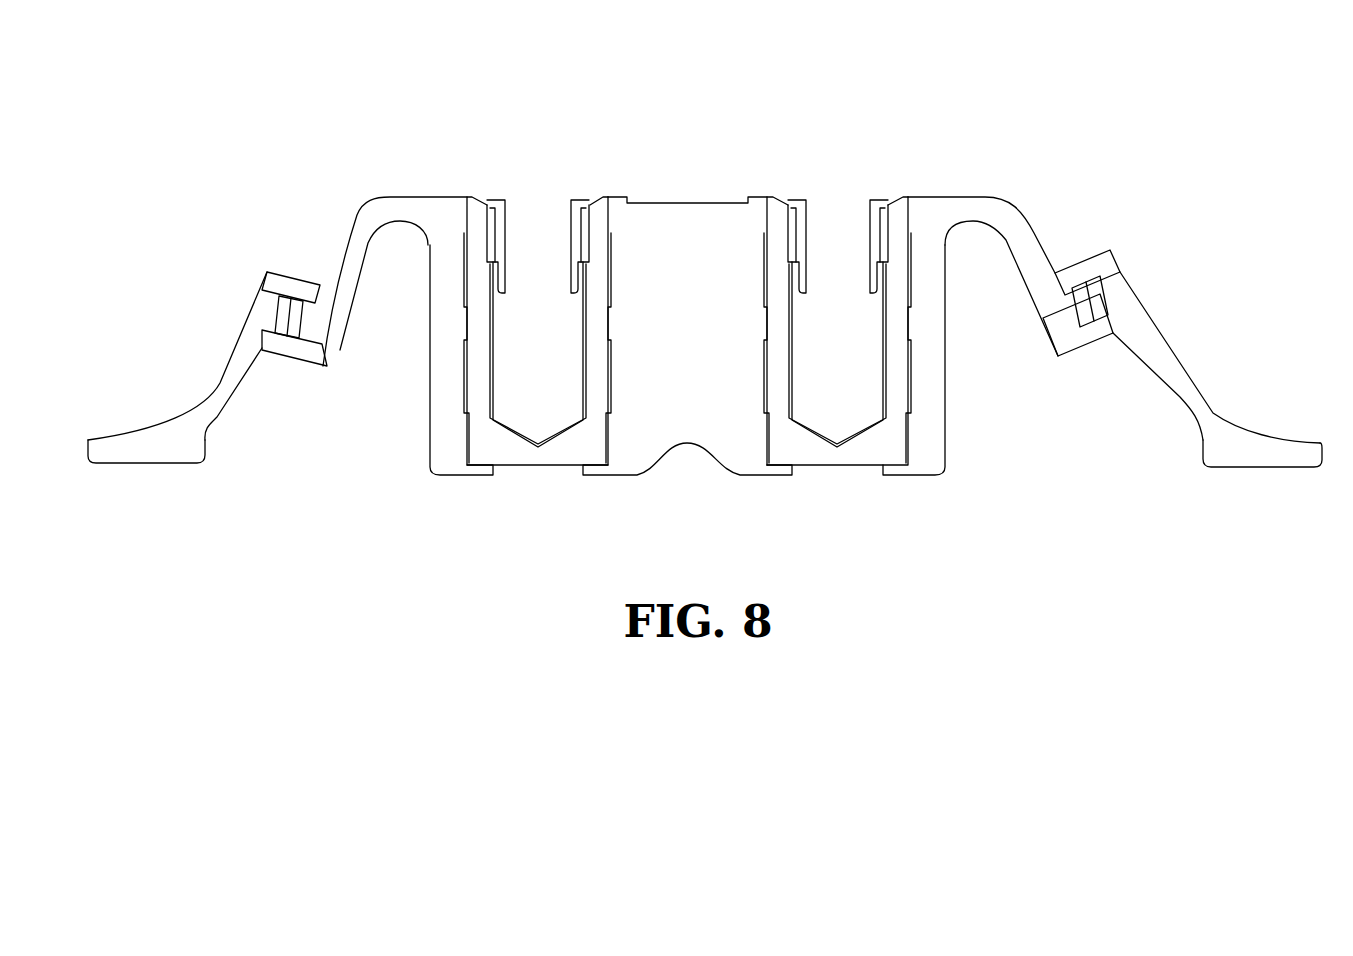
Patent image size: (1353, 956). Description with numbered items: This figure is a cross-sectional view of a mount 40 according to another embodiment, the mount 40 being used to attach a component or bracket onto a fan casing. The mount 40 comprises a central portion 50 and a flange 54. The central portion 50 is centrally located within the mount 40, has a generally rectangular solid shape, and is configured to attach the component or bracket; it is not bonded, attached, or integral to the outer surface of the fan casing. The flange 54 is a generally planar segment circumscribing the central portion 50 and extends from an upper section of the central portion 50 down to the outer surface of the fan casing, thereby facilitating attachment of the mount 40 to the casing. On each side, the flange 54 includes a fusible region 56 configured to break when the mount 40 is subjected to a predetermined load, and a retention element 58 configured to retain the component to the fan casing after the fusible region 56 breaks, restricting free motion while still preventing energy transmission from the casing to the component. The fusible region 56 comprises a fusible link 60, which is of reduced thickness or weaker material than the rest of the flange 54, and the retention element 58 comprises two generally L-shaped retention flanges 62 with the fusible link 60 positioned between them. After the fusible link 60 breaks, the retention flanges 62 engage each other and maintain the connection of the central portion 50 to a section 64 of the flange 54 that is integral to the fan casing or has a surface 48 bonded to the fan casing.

The mount 40 is at (868, 162).
The surface 48 is at (174, 478).
The central portion 50 is at (665, 228).
The flange 54 is at (355, 252).
The fusible region 56 is at (266, 312).
The retention element 58 is at (247, 248).
The fusible link 60 is at (293, 313).
The retention flanges 62 is at (286, 283).
The section of the flange 64 is at (227, 382).